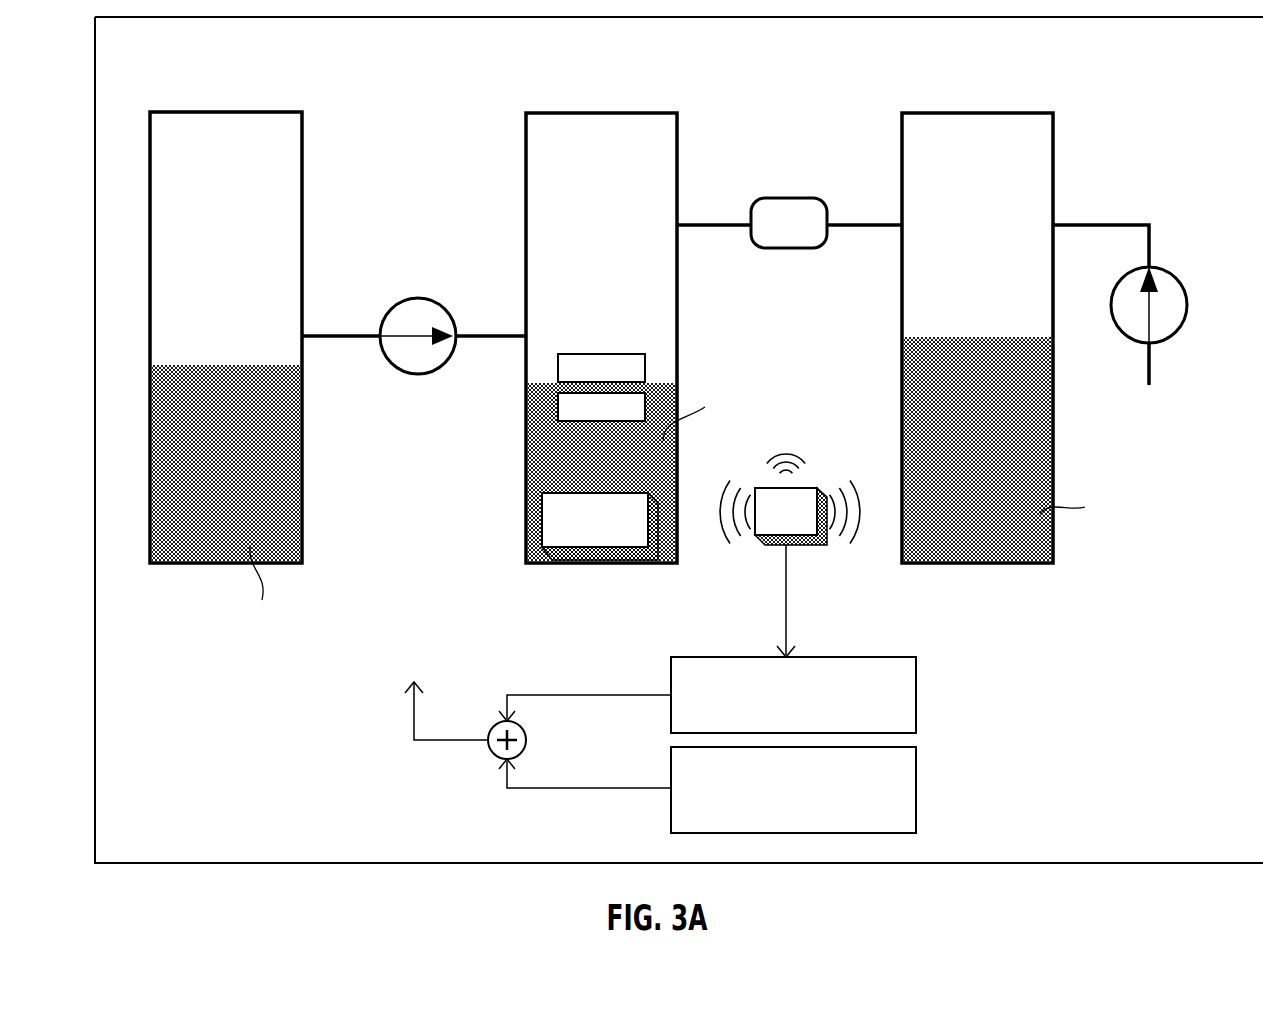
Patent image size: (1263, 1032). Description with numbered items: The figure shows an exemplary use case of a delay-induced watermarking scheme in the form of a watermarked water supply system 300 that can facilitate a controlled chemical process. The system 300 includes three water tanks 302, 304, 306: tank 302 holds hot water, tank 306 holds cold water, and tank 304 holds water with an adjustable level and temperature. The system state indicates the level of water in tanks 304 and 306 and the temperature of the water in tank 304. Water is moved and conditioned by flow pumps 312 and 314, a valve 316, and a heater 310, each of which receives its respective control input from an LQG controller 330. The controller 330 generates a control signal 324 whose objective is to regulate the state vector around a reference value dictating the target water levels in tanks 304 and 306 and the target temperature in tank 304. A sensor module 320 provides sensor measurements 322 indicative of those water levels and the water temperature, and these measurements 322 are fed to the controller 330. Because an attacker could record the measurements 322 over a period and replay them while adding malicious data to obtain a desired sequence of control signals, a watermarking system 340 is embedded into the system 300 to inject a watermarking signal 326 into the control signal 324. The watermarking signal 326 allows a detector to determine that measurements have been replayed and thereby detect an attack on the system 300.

The watermarked water supply system 300 is at (672, 72).
The water tank 302 is at (212, 166).
The water tank 304 is at (587, 166).
The water tank 306 is at (963, 166).
The heater 310 is at (581, 539).
The flow pump 312 is at (418, 375).
The flow pump 314 is at (1187, 310).
The valve 316 is at (790, 197).
The sensor module 320 is at (830, 548).
The sensor measurements 322 is at (786, 616).
The control signal 324 is at (608, 695).
The watermarking signal 326 is at (608, 788).
The LQG controller 330 is at (779, 715).
The watermarking system 340 is at (779, 808).